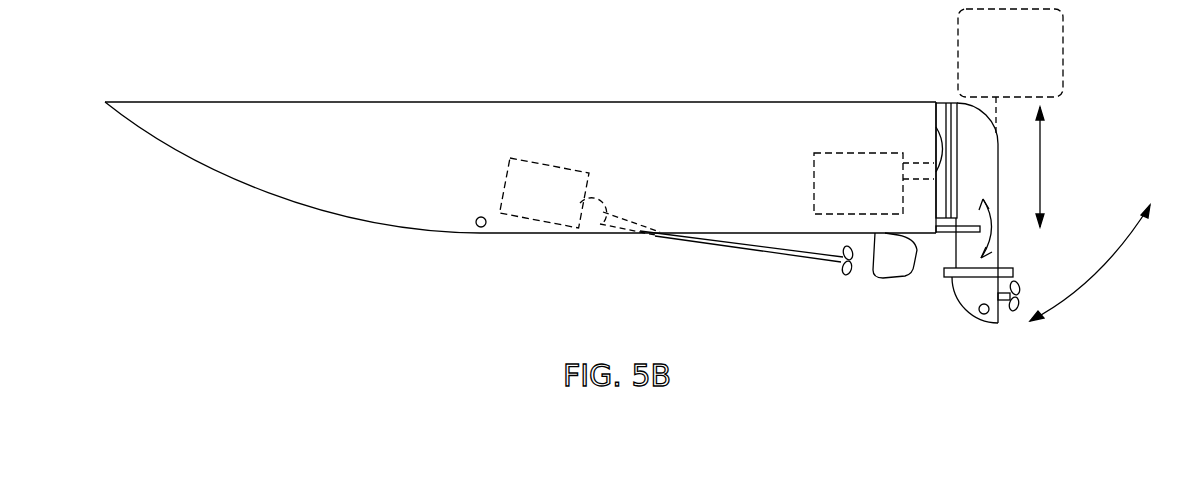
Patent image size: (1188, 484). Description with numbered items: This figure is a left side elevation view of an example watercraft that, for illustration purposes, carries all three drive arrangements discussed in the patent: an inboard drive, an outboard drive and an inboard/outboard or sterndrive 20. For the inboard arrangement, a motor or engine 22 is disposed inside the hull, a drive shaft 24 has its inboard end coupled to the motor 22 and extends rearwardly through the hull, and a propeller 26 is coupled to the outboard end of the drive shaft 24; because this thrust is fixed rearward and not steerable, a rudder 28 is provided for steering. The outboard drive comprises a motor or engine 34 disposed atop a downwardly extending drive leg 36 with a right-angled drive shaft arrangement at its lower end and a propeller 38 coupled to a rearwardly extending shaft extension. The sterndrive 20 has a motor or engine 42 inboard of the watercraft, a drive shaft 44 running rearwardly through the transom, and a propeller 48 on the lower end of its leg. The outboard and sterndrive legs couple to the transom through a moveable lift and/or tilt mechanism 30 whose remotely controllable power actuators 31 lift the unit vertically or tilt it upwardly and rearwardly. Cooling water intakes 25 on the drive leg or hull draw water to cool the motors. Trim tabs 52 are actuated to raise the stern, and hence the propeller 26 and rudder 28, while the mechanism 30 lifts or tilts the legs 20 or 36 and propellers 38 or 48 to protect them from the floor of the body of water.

The inboard/outboard (I/O) or sterndrive 20 is at (950, 167).
The motor or engine 22 is at (552, 158).
The drive shaft 24 is at (745, 250).
The cooling water intake 25 is at (481, 227).
The propeller 26 is at (843, 275).
The rudder 28 is at (895, 280).
The lift and/or tilt (L/T) mechanism 30 is at (942, 238).
The power actuators 31 is at (940, 137).
The motor or engine 34 is at (1063, 43).
The drive leg 36 is at (967, 113).
The propeller 38 is at (1063, 269).
The motor or engine 42 is at (831, 153).
The drive shaft 44 is at (917, 163).
The propeller 48 is at (1022, 287).
The trim tab 52 is at (963, 222).